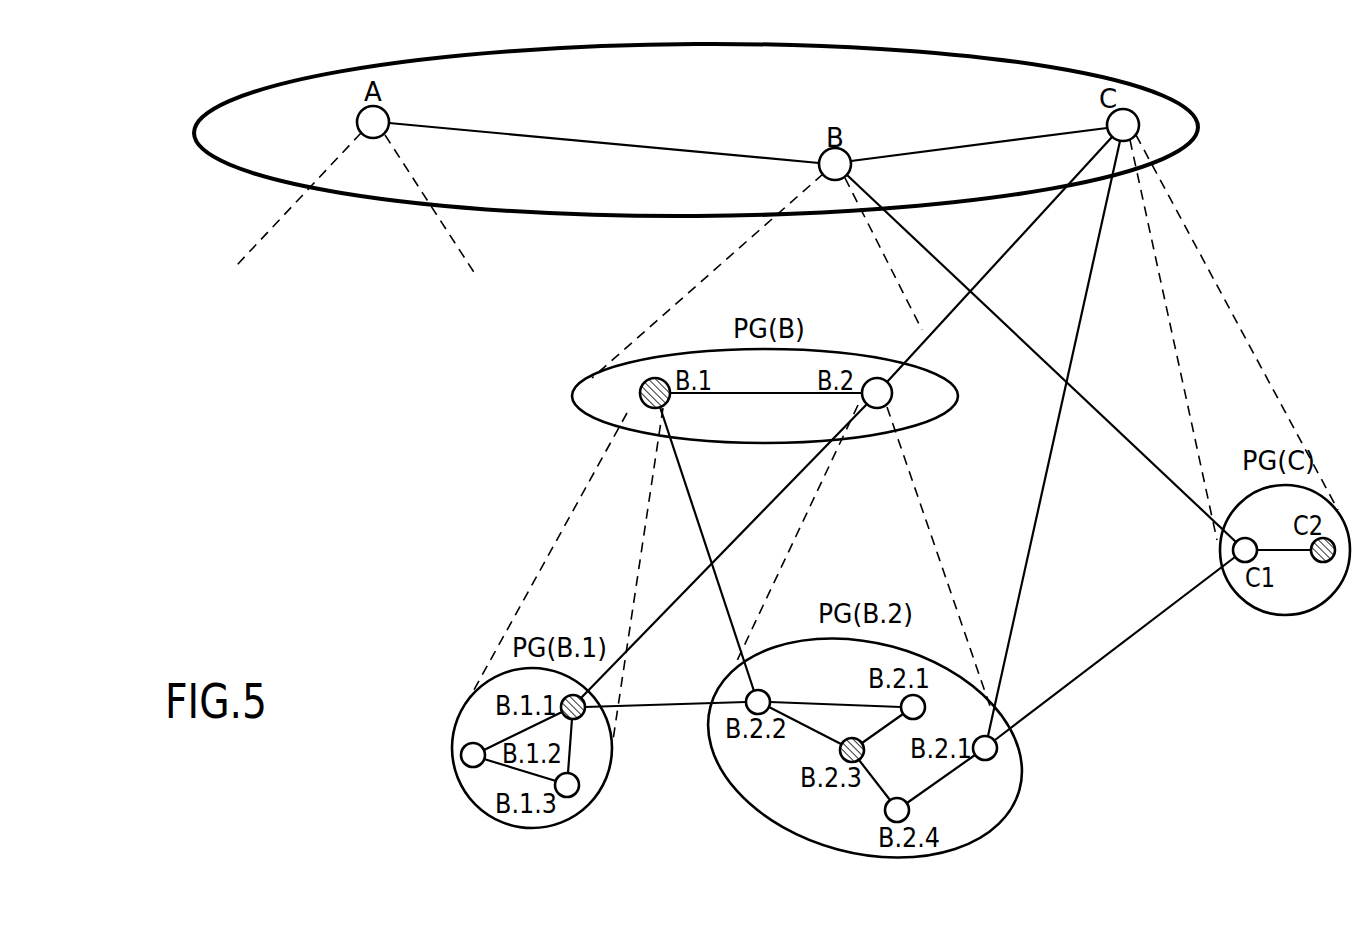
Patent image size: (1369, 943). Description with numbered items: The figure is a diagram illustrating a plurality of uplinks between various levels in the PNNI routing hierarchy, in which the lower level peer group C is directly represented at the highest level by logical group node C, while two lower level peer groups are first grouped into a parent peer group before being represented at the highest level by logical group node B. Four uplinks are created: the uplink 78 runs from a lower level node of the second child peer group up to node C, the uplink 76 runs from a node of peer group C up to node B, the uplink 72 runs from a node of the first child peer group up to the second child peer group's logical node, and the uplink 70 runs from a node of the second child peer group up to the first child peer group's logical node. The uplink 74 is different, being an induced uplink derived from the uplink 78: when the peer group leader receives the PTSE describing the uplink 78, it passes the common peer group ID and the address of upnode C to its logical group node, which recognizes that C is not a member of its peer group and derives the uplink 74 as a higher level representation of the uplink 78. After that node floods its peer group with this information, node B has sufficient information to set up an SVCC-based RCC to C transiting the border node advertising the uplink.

The uplink 70 is at (690, 515).
The uplink 72 is at (738, 547).
The induced uplink 74 is at (953, 318).
The uplink 76 is at (1009, 327).
The uplink 78 is at (1093, 278).